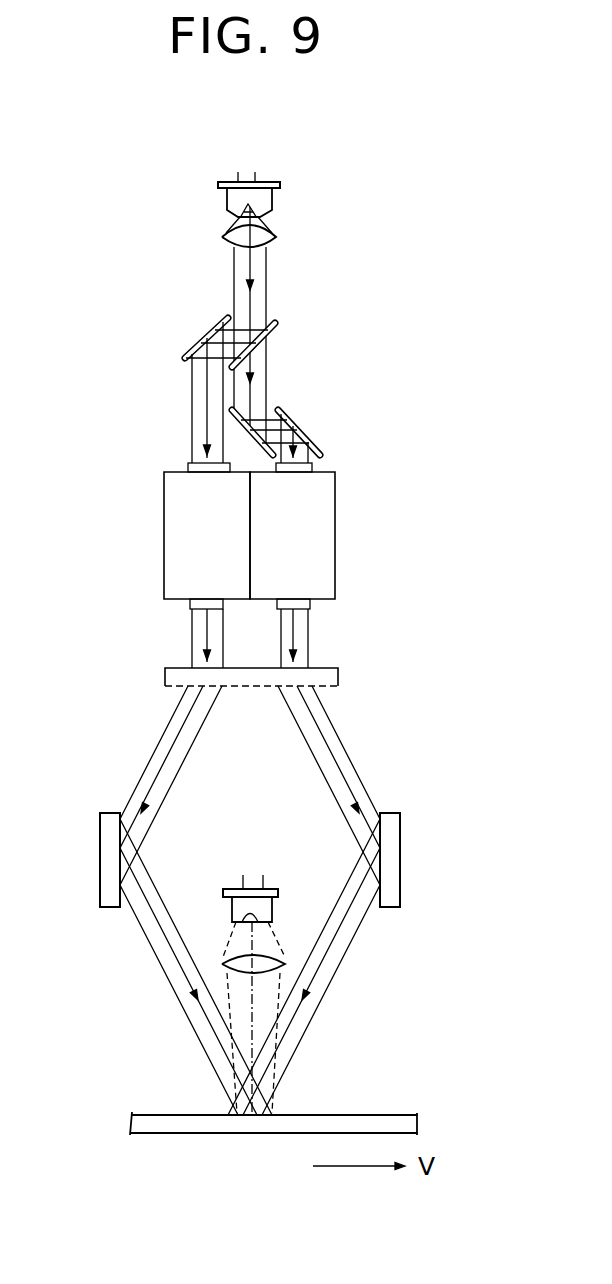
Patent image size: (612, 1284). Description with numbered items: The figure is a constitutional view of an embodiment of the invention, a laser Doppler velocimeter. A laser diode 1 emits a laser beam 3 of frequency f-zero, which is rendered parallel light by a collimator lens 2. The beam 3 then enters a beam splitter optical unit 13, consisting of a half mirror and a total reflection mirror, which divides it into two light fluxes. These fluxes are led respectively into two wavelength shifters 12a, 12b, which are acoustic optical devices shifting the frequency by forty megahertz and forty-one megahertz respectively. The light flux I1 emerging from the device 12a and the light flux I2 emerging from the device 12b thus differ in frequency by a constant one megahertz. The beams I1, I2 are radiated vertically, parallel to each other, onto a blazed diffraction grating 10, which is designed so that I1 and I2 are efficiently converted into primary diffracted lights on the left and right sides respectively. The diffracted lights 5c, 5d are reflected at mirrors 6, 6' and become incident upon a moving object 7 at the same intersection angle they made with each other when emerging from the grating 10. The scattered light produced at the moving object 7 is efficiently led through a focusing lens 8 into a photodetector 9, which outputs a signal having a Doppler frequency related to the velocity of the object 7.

The laser diode 1 is at (273, 200).
The collimator lens 2 is at (276, 238).
The laser beam 3 is at (258, 293).
The beam splitter optical unit 13 is at (229, 316).
The wavelength shifter 12a is at (178, 500).
The wavelength shifter 12b is at (325, 530).
The light flux I1 is at (207, 628).
The light flux I2 is at (293, 640).
The diffraction grating 10 is at (338, 680).
The diffracted light 5c is at (170, 755).
The diffracted light 5d is at (337, 768).
The mirror 6 is at (86, 846).
The mirror 6' is at (416, 846).
The photodetector 9 is at (273, 910).
The focusing lens 8 is at (286, 964).
The moving object 7 is at (154, 1120).